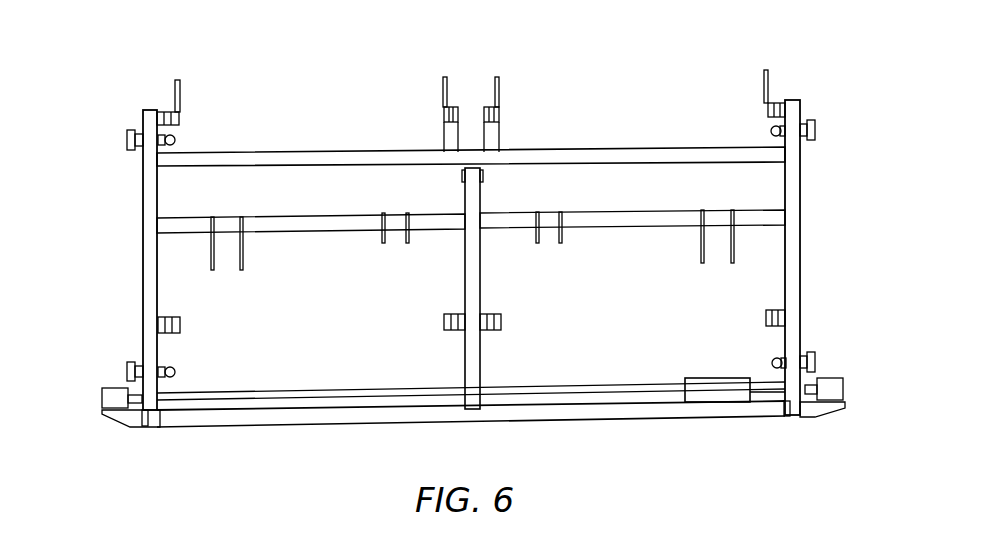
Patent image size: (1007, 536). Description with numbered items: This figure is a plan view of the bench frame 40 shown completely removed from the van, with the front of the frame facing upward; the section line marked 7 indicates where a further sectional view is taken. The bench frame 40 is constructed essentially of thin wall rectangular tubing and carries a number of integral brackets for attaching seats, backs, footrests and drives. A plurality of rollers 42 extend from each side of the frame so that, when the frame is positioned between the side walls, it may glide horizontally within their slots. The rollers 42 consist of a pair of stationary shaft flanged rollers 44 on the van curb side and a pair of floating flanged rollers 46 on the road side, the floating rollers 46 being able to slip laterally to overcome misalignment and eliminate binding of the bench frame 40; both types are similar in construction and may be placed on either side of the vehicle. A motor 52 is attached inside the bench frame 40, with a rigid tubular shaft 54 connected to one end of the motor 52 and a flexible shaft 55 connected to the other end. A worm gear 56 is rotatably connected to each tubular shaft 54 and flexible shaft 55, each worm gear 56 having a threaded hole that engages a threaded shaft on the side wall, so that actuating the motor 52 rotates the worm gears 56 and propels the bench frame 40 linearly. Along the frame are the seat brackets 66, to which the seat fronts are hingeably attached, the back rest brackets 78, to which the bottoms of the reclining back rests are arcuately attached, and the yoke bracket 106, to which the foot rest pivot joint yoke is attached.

The bench frame 40 is at (662, 147).
The rollers 42 is at (129, 100).
The stationary shaft flanged rollers 44 is at (818, 128).
The floating flanged rollers 46 is at (127, 140).
The motor 52 is at (712, 405).
The rigid tubular shaft 54 is at (318, 396).
The flexible shaft 55 is at (766, 396).
The worm gear 56 is at (100, 406).
The seat brackets 66 is at (180, 116).
The back rest brackets 78 is at (180, 325).
The yoke bracket 106 is at (181, 92).
The section line 7- 7 is at (105, 283).